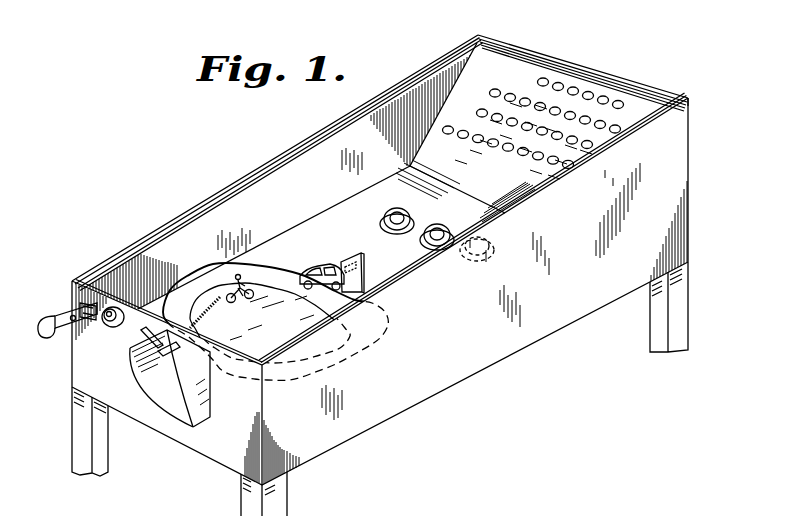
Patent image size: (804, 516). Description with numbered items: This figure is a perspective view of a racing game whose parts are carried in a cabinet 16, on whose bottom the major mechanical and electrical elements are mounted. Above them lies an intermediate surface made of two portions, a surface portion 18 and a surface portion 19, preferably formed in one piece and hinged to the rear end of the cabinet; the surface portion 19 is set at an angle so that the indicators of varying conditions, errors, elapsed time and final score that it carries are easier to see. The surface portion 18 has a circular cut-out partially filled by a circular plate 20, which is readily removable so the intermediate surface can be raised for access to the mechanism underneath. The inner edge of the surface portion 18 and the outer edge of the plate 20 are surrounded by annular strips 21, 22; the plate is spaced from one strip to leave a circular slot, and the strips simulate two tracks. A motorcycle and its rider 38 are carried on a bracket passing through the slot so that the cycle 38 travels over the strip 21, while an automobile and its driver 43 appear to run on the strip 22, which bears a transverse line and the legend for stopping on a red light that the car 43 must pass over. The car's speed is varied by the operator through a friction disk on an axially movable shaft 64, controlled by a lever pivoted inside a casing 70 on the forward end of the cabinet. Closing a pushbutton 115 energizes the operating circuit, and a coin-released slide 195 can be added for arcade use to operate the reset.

The cabinet 16 is at (293, 146).
The intermediate surface portion 19 is at (528, 77).
The intermediate surface portion 18 is at (327, 240).
The circular plate 20 is at (294, 323).
The annular strip 21 is at (213, 322).
The annular strip 22 is at (363, 276).
The figure 43 is at (330, 267).
The figure 38 is at (242, 285).
The coin-released slide 195 is at (58, 316).
The pushbutton 115 is at (112, 329).
The shaft 64 is at (142, 332).
The casing 70 is at (145, 385).